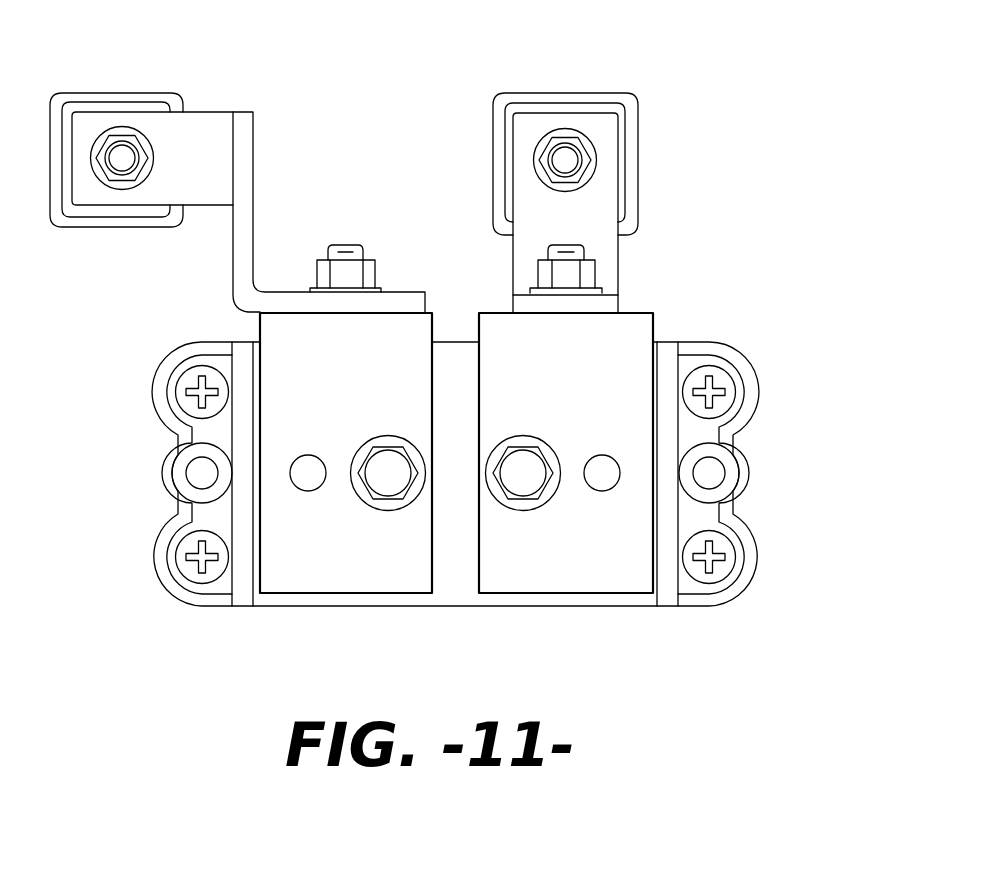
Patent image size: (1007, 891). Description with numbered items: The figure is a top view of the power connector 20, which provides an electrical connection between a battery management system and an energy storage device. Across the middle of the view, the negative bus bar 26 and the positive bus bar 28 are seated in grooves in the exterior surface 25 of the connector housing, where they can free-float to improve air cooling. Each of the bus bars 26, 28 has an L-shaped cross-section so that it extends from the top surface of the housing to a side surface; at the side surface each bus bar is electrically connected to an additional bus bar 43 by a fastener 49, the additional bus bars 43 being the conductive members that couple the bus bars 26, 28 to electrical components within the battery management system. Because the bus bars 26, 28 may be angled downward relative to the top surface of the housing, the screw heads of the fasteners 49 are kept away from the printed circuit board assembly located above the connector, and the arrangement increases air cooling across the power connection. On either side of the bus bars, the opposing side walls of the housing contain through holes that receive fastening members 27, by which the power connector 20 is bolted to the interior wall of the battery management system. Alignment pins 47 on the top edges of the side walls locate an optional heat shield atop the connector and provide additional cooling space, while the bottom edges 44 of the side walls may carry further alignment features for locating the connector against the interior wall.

The power connector 20 is at (767, 153).
The exterior surface 25 is at (623, 597).
The negative bus bar 26 is at (361, 384).
The positive bus bar 28 is at (584, 384).
The fastening member 27 is at (192, 382).
The additional bus bar 43 is at (242, 173).
The bottom edge 44 is at (183, 475).
The alignment pin 47 is at (732, 475).
The fastener 49 is at (327, 270).